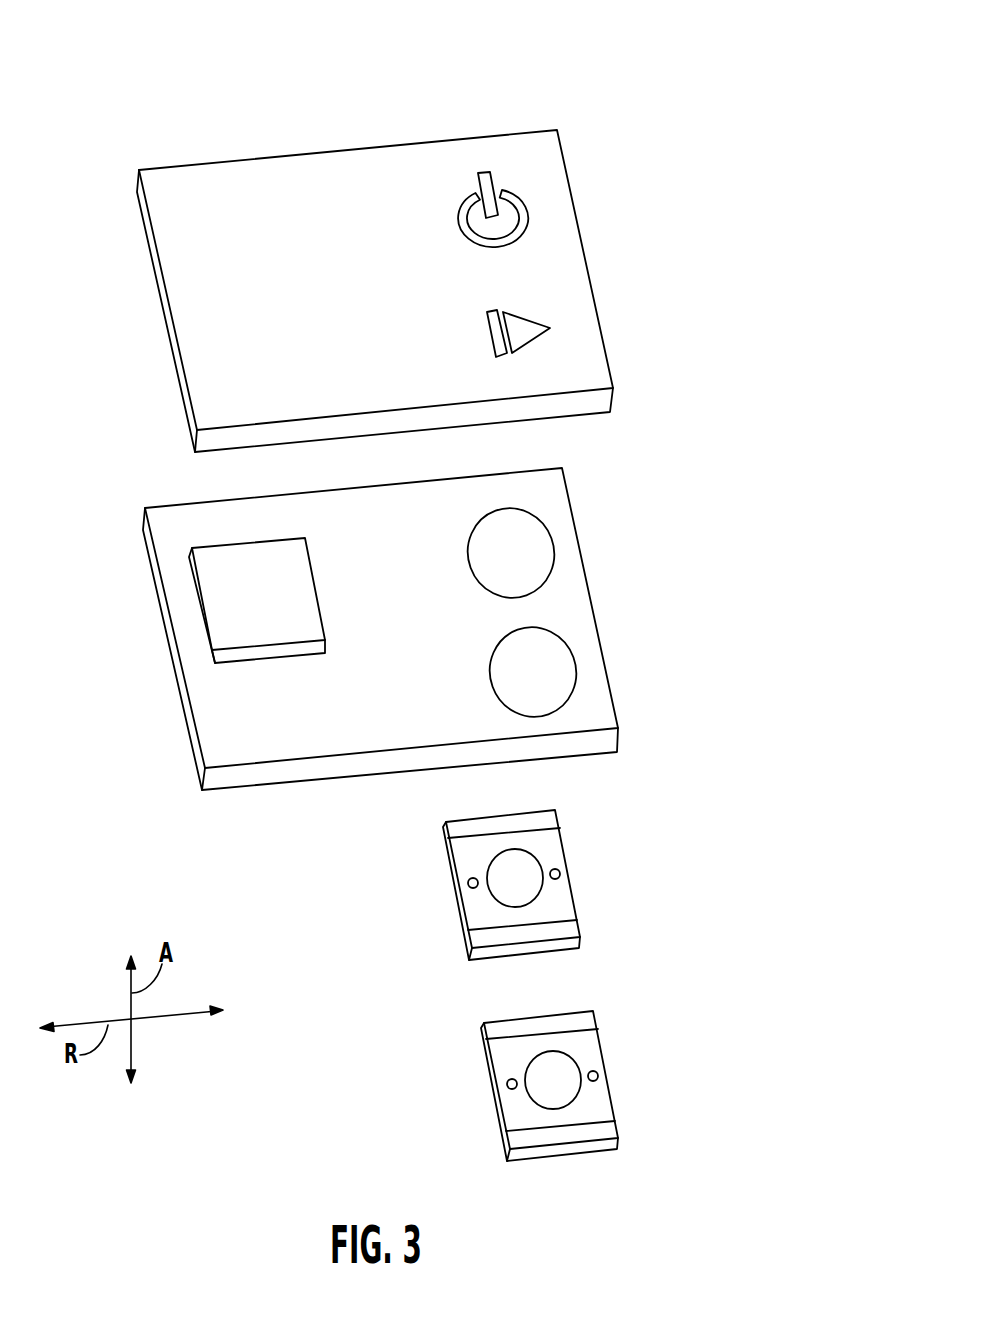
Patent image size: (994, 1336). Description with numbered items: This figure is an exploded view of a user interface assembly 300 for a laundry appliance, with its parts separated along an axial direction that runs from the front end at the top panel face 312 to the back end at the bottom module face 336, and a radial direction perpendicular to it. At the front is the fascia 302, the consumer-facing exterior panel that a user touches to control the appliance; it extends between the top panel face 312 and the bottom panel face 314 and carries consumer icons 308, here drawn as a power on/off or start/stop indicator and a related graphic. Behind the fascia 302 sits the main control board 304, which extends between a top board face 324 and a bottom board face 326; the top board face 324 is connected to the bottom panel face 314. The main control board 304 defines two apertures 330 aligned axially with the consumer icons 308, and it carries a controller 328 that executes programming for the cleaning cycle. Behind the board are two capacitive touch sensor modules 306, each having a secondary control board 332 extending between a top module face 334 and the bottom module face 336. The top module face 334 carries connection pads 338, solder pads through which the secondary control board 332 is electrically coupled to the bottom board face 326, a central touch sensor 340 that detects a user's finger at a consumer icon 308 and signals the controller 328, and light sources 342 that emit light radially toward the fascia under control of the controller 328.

The user interface assembly 300 is at (551, 78).
The fascia 302 is at (270, 170).
The main control board 304 is at (318, 500).
The capacitive touch sensor module 306 is at (567, 902).
The consumer icon 308 is at (528, 213).
The top panel face 312 is at (398, 180).
The bottom panel face 314 is at (569, 423).
The top board face 324 is at (170, 520).
The bottom board face 326 is at (256, 796).
The controller 328 is at (197, 603).
The aperture 330 is at (524, 552).
The secondary control board 332 is at (557, 842).
The top module face 334 is at (478, 913).
The bottom module face 336 is at (569, 958).
The connection pad 338 is at (548, 819).
The touch sensor 340 is at (495, 862).
The light source 342 is at (467, 883).